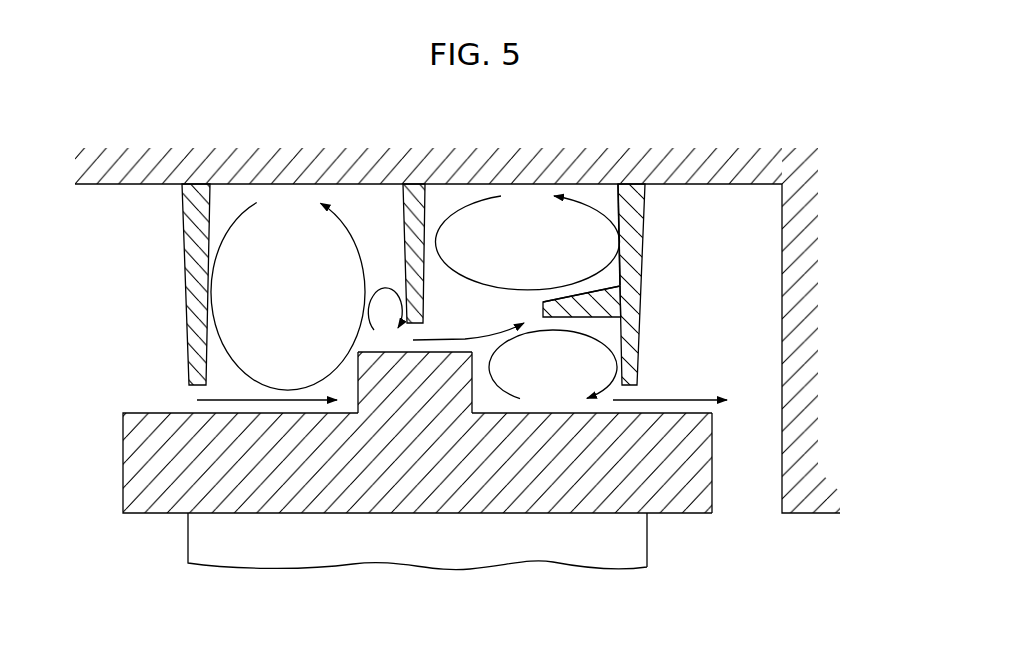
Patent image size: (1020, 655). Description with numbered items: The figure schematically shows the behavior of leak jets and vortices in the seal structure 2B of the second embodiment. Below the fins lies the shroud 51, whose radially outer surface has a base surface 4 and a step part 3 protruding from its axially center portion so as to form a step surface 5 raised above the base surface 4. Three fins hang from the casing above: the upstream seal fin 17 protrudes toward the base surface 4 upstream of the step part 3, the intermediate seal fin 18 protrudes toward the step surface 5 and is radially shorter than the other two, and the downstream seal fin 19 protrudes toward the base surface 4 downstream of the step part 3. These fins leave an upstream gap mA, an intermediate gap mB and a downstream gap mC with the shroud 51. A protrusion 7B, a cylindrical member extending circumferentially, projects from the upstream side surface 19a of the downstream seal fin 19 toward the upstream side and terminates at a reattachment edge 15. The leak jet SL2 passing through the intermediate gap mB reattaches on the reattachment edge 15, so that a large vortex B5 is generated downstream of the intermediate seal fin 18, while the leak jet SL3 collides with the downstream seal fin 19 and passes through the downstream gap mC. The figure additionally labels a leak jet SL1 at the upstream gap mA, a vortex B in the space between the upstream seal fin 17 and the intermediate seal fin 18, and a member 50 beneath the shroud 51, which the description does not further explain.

The seal structure 2B is at (159, 252).
The upstream seal fin 17 is at (203, 240).
The intermediate seal fin 18 is at (427, 220).
The downstream seal fin 19 is at (646, 226).
The upstream side surface 19a is at (622, 206).
The protrusion 7B is at (637, 299).
The reattachment edge 15 is at (543, 302).
The base surface 4 is at (311, 403).
The shroud 51 is at (709, 465).
The step part 3 is at (385, 378).
The step surface 5 is at (458, 348).
The bottom member 50 is at (632, 544).
The circulating flow B is at (222, 248).
The large vortex B5 is at (447, 271).
The upstream gap mA is at (193, 407).
The intermediate gap mB is at (406, 345).
The downstream gap mC is at (628, 408).
The first slit SL1 is at (257, 403).
The leak jet SL2 is at (485, 338).
The leak jet SL3 is at (685, 398).